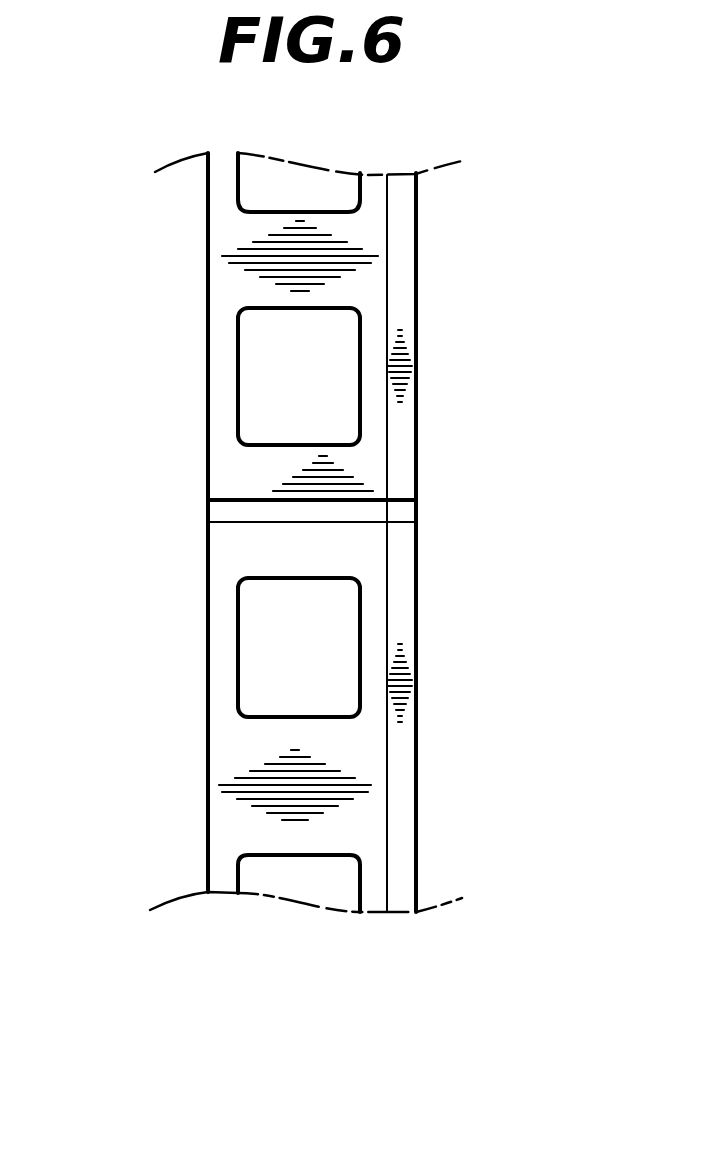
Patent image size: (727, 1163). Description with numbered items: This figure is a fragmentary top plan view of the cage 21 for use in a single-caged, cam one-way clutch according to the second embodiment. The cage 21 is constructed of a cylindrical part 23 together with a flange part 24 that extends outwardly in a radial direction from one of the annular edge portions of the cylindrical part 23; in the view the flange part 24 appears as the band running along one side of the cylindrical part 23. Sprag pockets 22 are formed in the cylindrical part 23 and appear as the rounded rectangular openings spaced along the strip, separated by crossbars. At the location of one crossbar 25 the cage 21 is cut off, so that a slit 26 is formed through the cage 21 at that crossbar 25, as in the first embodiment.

The cage 21 is at (262, 915).
The sprag pockets 22 is at (257, 652).
The cylindrical part 23 is at (353, 772).
The flange part 24 is at (400, 288).
The crossbar 25 is at (287, 475).
The slit 26 is at (397, 515).